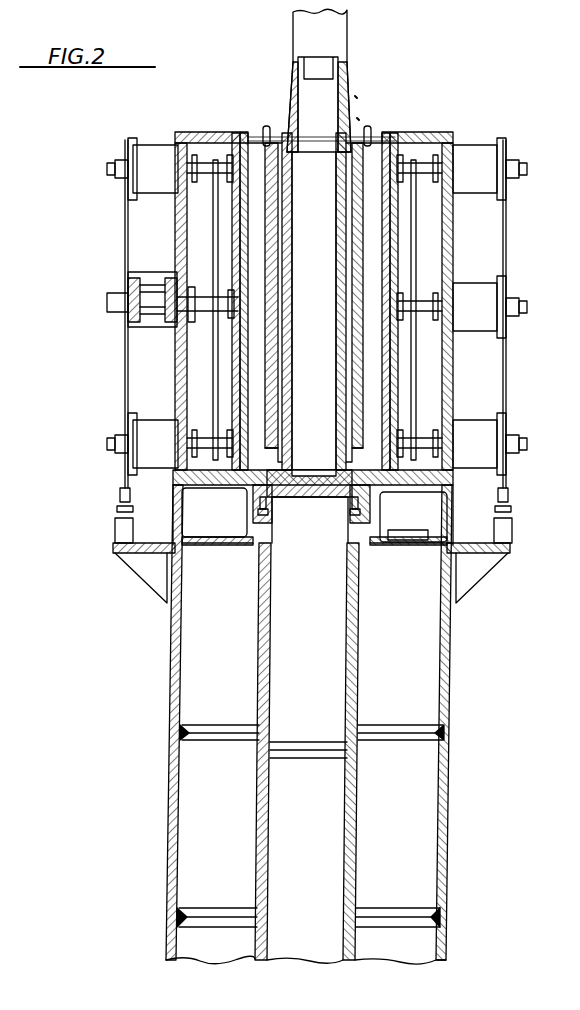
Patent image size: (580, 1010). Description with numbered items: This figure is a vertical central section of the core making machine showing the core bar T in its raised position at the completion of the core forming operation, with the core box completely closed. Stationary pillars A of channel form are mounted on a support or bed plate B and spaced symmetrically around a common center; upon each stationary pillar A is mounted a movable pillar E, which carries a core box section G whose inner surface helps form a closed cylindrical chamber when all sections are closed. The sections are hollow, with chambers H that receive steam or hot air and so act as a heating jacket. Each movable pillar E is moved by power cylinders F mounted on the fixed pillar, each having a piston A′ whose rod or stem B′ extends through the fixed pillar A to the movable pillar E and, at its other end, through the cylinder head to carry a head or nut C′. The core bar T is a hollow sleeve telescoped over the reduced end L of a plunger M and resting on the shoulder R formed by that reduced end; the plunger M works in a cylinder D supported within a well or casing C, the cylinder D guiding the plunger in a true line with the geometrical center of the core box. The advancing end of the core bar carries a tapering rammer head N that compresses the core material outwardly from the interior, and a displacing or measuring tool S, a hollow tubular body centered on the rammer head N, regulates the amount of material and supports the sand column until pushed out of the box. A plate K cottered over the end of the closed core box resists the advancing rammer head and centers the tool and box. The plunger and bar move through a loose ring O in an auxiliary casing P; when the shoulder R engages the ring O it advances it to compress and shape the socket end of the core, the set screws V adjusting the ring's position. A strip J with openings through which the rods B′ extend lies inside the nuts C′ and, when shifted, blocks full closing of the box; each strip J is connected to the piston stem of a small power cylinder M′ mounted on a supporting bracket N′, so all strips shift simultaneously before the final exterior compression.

The displacing or measuring tool S is at (320, 35).
The tapering rammer head N is at (347, 82).
The core box section G is at (258, 150).
The plate K is at (372, 137).
The chamber H is at (262, 173).
The movable pillar E is at (236, 233).
The core bar T is at (340, 263).
The reduced end of plunger L is at (314, 311).
The stationary pillar A is at (177, 380).
The piston A′ is at (167, 290).
The cylinder F is at (182, 306).
The bearing box F′ is at (447, 306).
The head or nut C′ is at (125, 160).
The rod or stem B′ is at (108, 170).
The strip J is at (123, 363).
The support or bed plate B is at (455, 497).
The auxiliary casing P is at (365, 495).
The loose ring O is at (347, 480).
The set screw V is at (257, 542).
The shoulder R is at (342, 493).
The plunger M is at (309, 627).
The cylinder D is at (355, 672).
The well or casing C is at (448, 672).
The small power cylinder M′ is at (117, 530).
The supporting bracket N′ is at (150, 567).